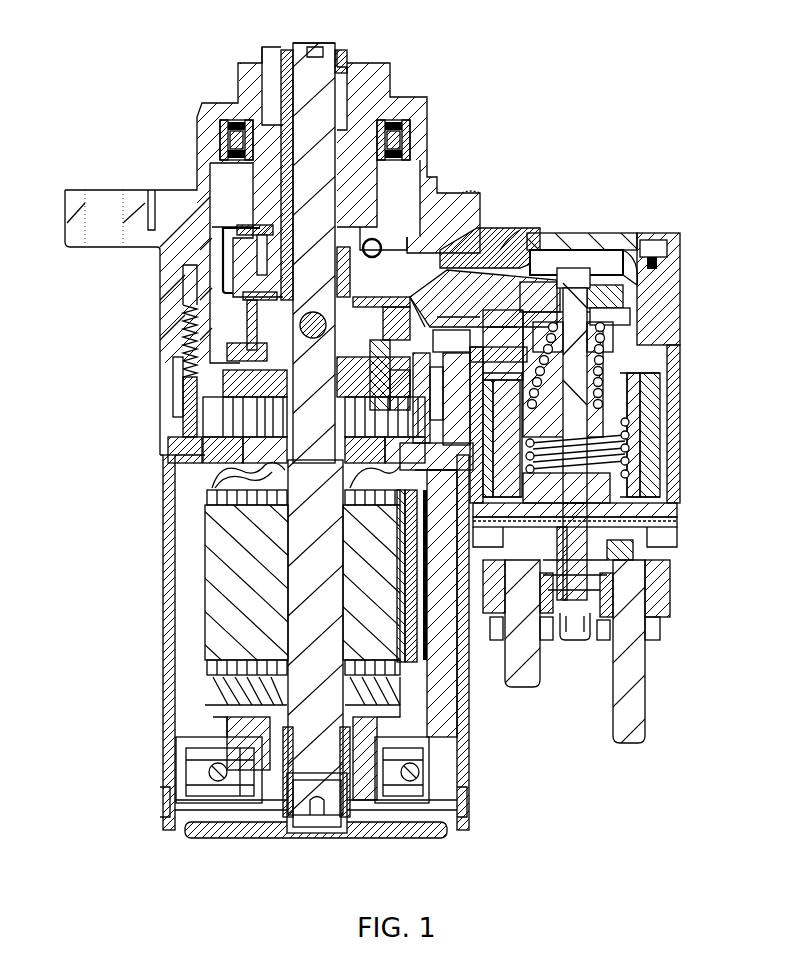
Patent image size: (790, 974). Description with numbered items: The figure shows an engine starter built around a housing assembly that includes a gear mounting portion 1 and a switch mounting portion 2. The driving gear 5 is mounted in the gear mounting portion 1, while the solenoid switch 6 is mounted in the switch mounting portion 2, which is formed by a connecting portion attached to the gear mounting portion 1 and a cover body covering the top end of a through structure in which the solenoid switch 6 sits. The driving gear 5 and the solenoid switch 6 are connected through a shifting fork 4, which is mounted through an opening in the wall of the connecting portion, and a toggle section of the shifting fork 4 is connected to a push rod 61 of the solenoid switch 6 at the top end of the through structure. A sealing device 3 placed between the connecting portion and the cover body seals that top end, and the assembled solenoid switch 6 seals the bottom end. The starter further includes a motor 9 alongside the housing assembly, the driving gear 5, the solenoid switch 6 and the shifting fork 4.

The gear mounting portion 1 is at (175, 218).
The switch mounting portion 2 is at (643, 233).
The sealing device 3 is at (500, 243).
The shifting fork 4 is at (488, 272).
The driving gear 5 is at (390, 120).
The solenoid switch 6 is at (638, 518).
The push rod 61 is at (577, 357).
The motor 9 is at (225, 552).